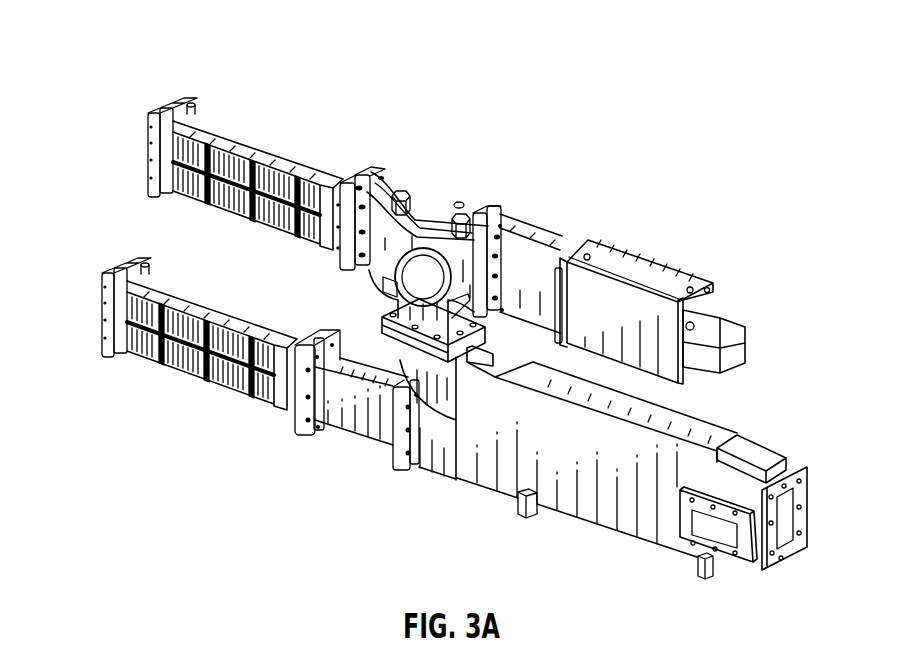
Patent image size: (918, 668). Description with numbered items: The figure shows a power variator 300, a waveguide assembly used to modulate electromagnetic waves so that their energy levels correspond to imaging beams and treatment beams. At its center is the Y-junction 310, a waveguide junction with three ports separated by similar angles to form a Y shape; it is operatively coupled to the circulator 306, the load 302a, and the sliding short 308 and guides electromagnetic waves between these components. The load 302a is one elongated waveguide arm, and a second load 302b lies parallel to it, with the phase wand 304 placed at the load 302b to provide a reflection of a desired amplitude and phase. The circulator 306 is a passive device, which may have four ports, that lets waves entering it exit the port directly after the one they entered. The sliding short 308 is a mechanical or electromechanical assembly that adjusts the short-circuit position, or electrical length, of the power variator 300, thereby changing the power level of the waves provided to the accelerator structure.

The power variator 300 is at (411, 299).
The load 302a is at (202, 174).
The load 302b is at (156, 334).
The phase wand 304 is at (322, 408).
The circulator 306 is at (603, 462).
The sliding short 308 is at (646, 299).
The Y-junction 310 is at (420, 259).